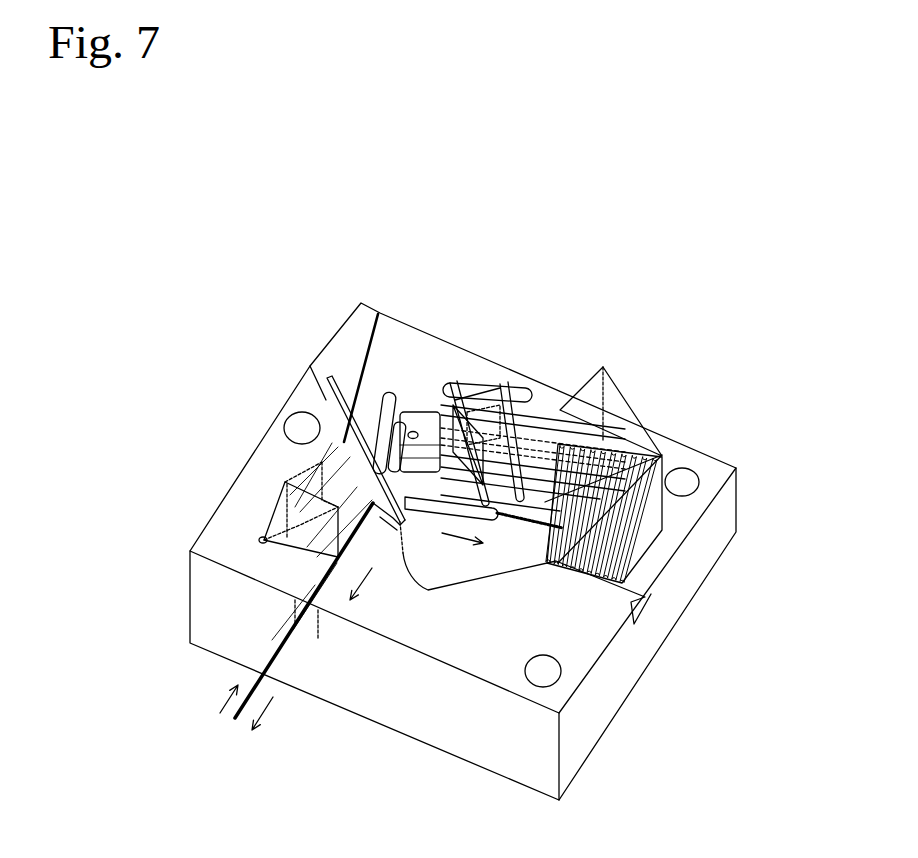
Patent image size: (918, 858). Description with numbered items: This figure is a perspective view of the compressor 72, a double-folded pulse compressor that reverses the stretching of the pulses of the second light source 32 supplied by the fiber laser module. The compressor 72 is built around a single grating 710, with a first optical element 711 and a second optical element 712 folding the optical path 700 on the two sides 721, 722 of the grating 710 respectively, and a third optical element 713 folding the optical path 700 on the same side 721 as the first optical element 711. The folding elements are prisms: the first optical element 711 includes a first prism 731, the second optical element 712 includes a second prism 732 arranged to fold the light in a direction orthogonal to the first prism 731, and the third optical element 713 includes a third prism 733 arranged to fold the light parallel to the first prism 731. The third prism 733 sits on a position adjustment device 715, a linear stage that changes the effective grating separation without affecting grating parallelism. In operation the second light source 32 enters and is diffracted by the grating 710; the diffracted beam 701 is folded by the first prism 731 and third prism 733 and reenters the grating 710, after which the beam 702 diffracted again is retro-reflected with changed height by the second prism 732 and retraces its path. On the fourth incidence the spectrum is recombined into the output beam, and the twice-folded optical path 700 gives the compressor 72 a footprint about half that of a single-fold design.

The compressor 72 is at (282, 317).
The optical path 700 is at (510, 540).
The beam 701 is at (530, 560).
The beam 702 is at (341, 492).
The grating 710 is at (378, 505).
The second optical element 712 is at (265, 497).
The second prism 732 is at (262, 534).
The position adjustment device 715 is at (425, 398).
The third optical element 713 is at (480, 370).
The third prism 733 is at (505, 388).
The first optical element 711 is at (652, 395).
The first prism 731 is at (640, 436).
The second light source 32 is at (223, 694).
The side of the grating 722 is at (375, 580).
The side of the grating 721 is at (453, 537).